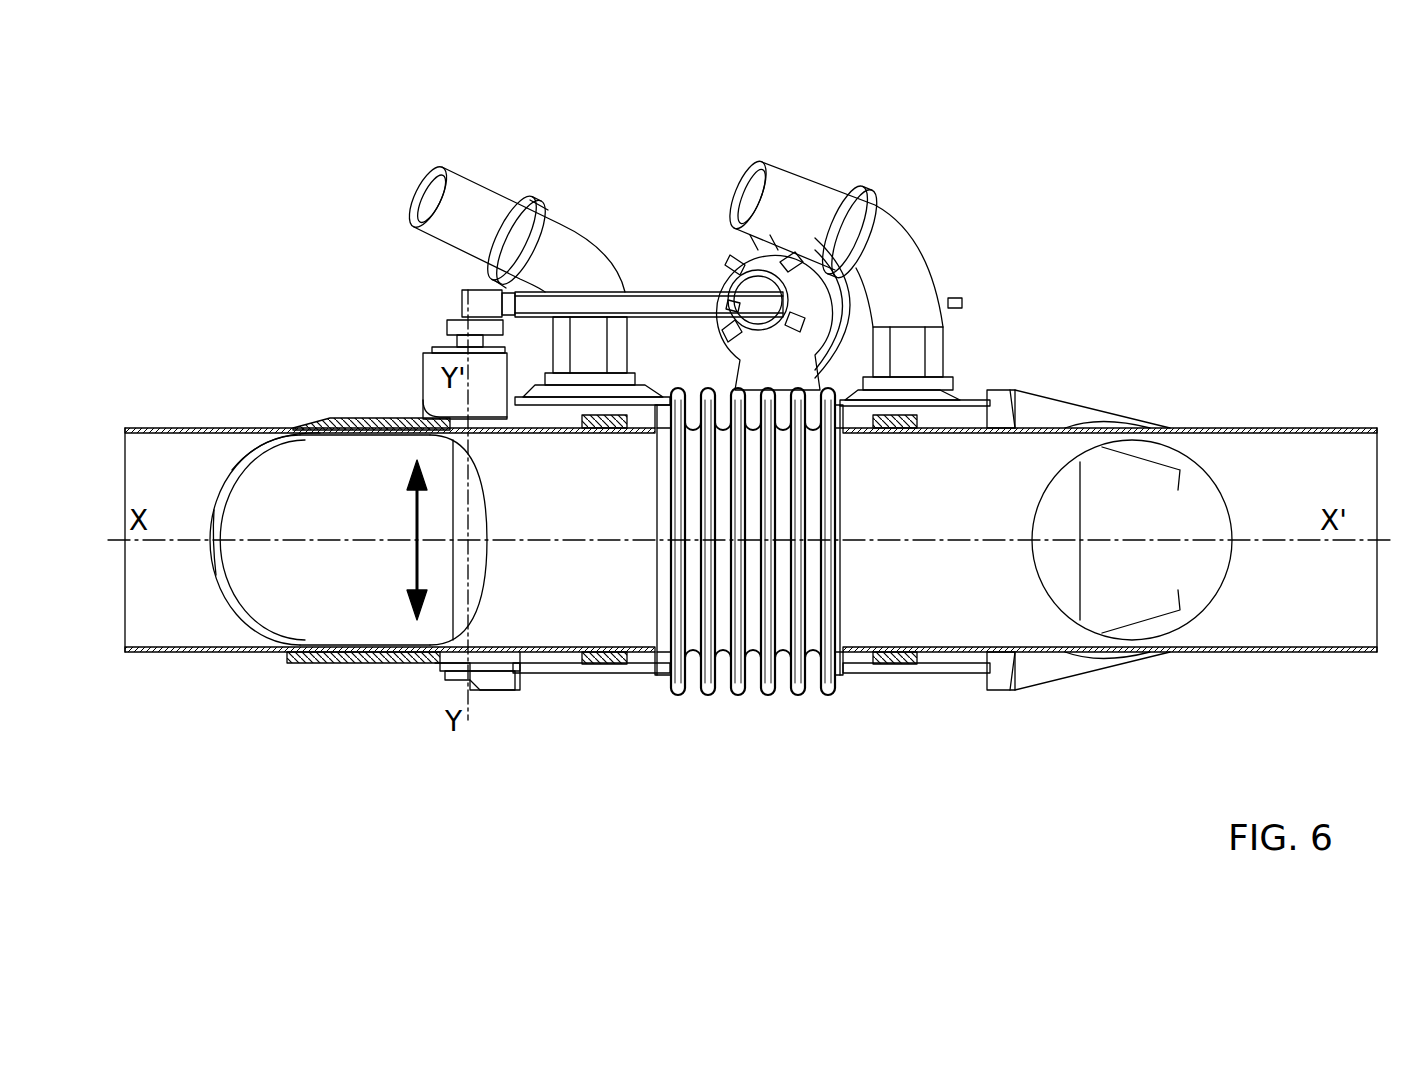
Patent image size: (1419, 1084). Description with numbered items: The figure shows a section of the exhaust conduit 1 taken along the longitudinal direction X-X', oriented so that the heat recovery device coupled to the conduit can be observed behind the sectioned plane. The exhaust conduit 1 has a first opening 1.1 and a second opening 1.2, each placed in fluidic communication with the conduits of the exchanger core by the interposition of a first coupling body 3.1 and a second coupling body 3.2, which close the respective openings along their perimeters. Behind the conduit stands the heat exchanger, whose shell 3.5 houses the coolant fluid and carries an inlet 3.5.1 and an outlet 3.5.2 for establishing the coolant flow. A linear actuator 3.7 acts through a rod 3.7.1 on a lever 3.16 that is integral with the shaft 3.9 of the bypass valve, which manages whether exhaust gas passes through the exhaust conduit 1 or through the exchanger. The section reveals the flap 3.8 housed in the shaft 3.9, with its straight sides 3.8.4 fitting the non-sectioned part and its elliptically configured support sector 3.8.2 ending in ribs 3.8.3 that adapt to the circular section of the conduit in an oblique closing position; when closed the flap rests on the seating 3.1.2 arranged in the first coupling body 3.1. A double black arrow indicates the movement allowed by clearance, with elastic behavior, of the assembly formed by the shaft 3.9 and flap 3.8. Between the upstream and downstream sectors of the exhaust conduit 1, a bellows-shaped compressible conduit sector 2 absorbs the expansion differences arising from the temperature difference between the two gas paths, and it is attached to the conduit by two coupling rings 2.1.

The exhaust conduit 1 is at (175, 650).
The first opening 1.1 is at (472, 447).
The second opening 1.2 is at (1085, 512).
The compressible conduit sector 2 is at (770, 695).
The coupling rings 2.1 is at (590, 683).
The first coupling body 3.1 is at (443, 677).
The seating 3.1.2 is at (323, 652).
The second coupling body 3.2 is at (1083, 427).
The shell 3.5 is at (537, 675).
The inlet 3.5.1 is at (585, 235).
The outlet 3.5.2 is at (878, 210).
The linear actuator 3.7 is at (943, 260).
The rod 3.7.1 is at (572, 303).
The flap 3.8 is at (270, 585).
The elliptically configured support sector 3.8.2 is at (255, 452).
The ribs 3.8.3 is at (210, 523).
The straight sides 3.8.4 is at (342, 417).
The shaft 3.9 is at (450, 343).
The lever 3.16 is at (460, 327).